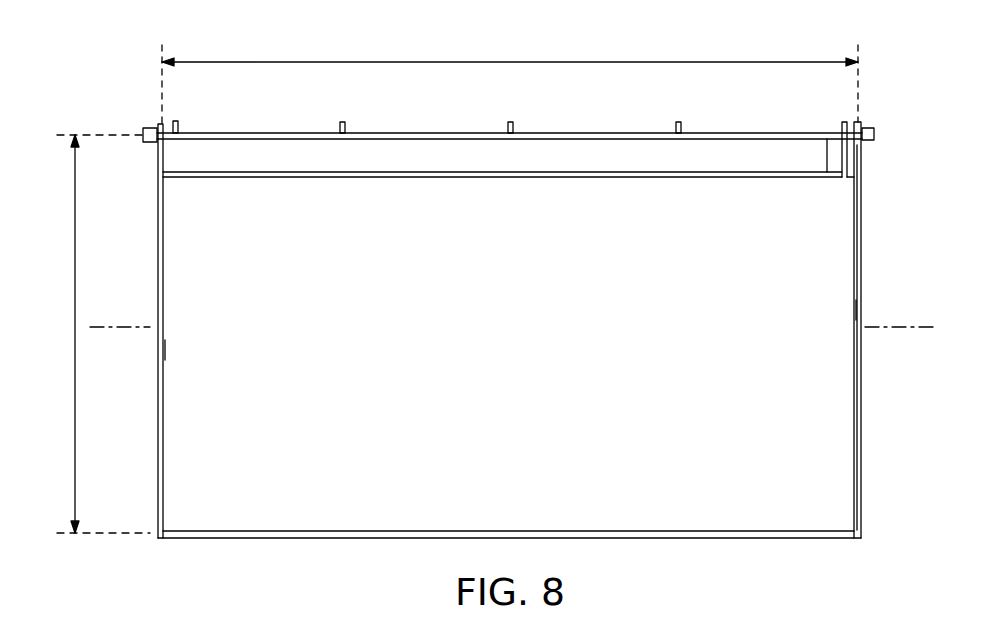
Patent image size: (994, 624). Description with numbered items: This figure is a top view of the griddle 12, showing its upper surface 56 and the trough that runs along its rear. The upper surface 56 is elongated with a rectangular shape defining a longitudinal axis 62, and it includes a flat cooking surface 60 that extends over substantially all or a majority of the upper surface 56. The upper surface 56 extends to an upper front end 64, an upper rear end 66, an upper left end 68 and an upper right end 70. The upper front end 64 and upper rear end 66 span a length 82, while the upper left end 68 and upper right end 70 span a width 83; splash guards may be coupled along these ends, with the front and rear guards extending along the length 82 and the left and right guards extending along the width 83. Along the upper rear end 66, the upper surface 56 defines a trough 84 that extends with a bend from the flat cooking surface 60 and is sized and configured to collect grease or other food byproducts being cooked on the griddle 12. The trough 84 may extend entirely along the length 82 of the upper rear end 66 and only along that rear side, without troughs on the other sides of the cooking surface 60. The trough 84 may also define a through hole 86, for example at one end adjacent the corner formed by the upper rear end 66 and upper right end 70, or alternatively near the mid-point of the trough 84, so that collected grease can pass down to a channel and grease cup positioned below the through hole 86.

The griddle 12 is at (893, 95).
The upper surface 56 is at (812, 398).
The flat cooking surface 60 is at (806, 445).
The longitudinal axis 62 is at (912, 327).
The upper front end 64 is at (335, 527).
The upper rear end 66 is at (386, 146).
The upper left end 68 is at (172, 487).
The upper right end 70 is at (852, 281).
The length 82 is at (706, 62).
The width 83 is at (73, 233).
The trough 84 is at (718, 142).
The through hole 86 is at (828, 150).